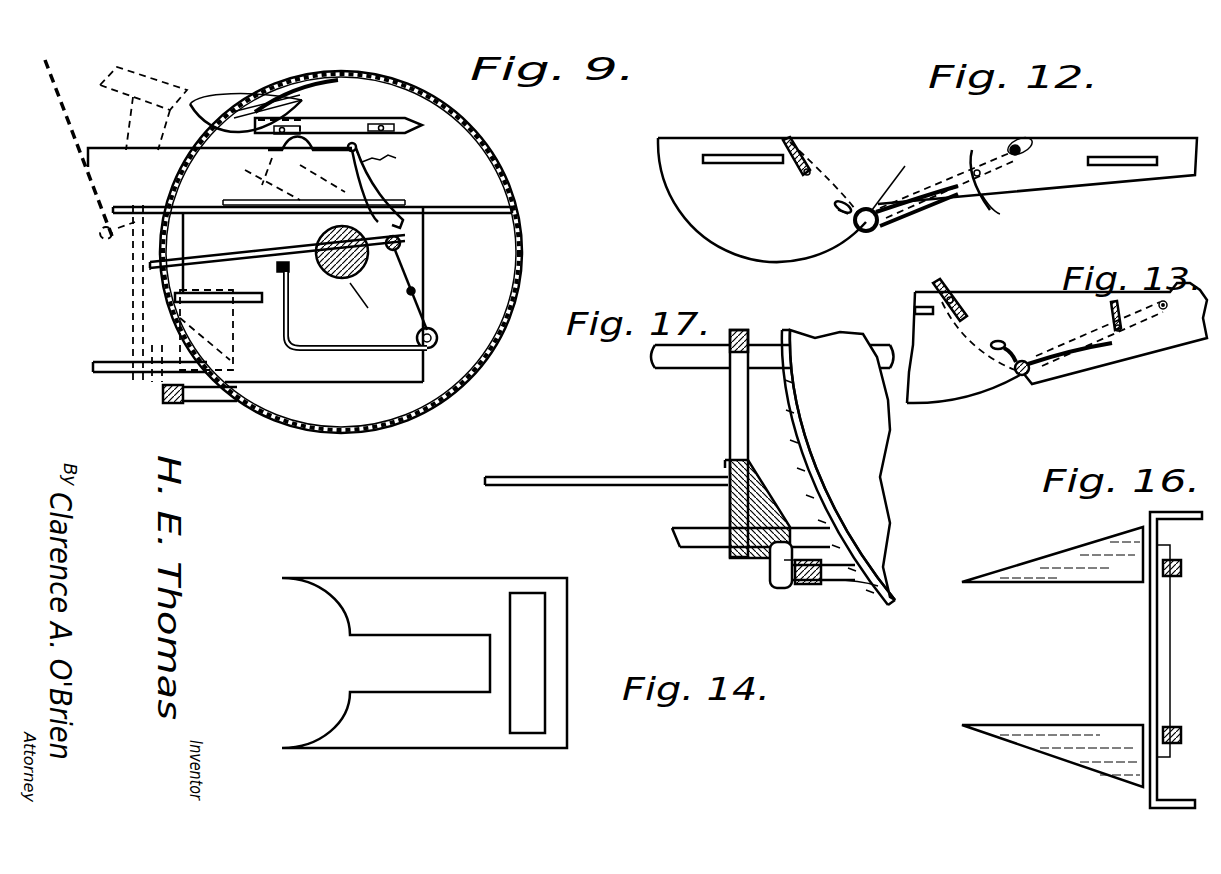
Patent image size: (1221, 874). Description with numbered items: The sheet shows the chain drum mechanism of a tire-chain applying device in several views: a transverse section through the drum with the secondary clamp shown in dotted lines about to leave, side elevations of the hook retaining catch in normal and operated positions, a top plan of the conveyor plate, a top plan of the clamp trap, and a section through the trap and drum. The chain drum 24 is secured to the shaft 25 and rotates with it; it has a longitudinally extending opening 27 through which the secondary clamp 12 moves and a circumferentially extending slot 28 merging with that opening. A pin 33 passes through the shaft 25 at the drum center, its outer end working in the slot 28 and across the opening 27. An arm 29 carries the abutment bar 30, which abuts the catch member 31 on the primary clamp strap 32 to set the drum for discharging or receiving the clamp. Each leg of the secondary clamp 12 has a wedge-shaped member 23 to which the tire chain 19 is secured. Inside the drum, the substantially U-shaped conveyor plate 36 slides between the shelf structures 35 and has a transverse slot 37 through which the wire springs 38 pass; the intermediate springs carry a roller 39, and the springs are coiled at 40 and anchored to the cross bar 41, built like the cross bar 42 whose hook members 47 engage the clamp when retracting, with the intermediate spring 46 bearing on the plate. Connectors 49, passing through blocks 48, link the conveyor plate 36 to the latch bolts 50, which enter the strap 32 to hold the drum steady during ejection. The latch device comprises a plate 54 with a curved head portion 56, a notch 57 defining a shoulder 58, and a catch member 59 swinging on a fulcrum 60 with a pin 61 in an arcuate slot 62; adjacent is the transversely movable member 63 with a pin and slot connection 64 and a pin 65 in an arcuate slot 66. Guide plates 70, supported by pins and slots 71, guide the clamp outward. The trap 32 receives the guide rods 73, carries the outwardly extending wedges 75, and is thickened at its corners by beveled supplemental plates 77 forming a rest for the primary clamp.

In FIG. 9, the secondary clamp 12 is at (160, 85).
In FIG. 9, the tire chain 19 is at (66, 140).
In FIG. 9, the wedge-shaped member 23 is at (100, 232).
In FIG. 17, the chain drum 24 is at (826, 494).
In FIG. 9, the shaft 25 is at (338, 272).
In FIG. 17, the longitudinally extending opening 27 is at (797, 402).
In FIG. 9, the circumferentially extending slot 28 is at (278, 88).
In FIG. 9, the arm 29 is at (216, 403).
In FIG. 17, the arm 29 is at (874, 588).
In FIG. 9, the abutment bar 30 is at (170, 405).
In FIG. 17, the abutment bar 30 is at (800, 592).
In FIG. 17, the catch member 31 is at (778, 591).
In FIG. 16, the catch member 31 is at (1177, 566).
In FIG. 9, the primary clamp strap 32 is at (124, 306).
In FIG. 17, the primary clamp strap 32 is at (732, 570).
In FIG. 16, the primary clamp strap 32 is at (1132, 656).
In FIG. 9, the pin 33 is at (238, 258).
In FIG. 9, the shelf structure 35 is at (232, 202).
In FIG. 9, the conveyor plate 36 is at (184, 210).
In FIG. 14, the conveyor plate 36 is at (412, 590).
In FIG. 9, the transversely extending slot 37 is at (354, 210).
In FIG. 14, the transversely extending slot 37 is at (540, 634).
In FIG. 9, the wire springs 38 is at (412, 278).
In FIG. 9, the roller 39 is at (306, 150).
In FIG. 9, the coil 40 is at (438, 334).
In FIG. 9, the cross bar 41 is at (426, 294).
In FIG. 9, the cross bar 42 is at (396, 158).
In FIG. 9, the intermediate spring 46 is at (394, 206).
In FIG. 9, the hook members 47 is at (128, 150).
In FIG. 9, the blocks 48 is at (260, 304).
In FIG. 9, the connectors 49 is at (185, 262).
In FIG. 9, the latch bolts 50 is at (113, 373).
In FIG. 9, the plate 54 is at (322, 128).
In FIG. 12, the plate 54 is at (864, 146).
In FIG. 13, the plate 54 is at (1002, 290).
In FIG. 12, the curved head portion 56 is at (758, 248).
In FIG. 13, the curved head portion 56 is at (946, 392).
In FIG. 12, the notch 57 is at (897, 175).
In FIG. 13, the notch 57 is at (1026, 360).
In FIG. 12, the shoulder 58 is at (920, 170).
In FIG. 13, the shoulder 58 is at (1070, 348).
In FIG. 12, the catch member 59 is at (925, 207).
In FIG. 13, the catch member 59 is at (1068, 368).
In FIG. 12, the fulcrum 60 is at (1020, 148).
In FIG. 13, the fulcrum 60 is at (1165, 310).
In FIG. 12, the pin 61 is at (1002, 207).
In FIG. 13, the pin 61 is at (1113, 328).
In FIG. 12, the arcuate slot 62 is at (976, 150).
In FIG. 13, the arcuate slot 62 is at (1110, 302).
In FIG. 12, the transversely movable member 63 is at (868, 234).
In FIG. 13, the transversely movable member 63 is at (945, 283).
In FIG. 12, the pin and slot connection 64 is at (810, 172).
In FIG. 13, the pin and slot connection 64 is at (944, 292).
In FIG. 12, the pin 65 is at (852, 204).
In FIG. 13, the pin 65 is at (1000, 342).
In FIG. 12, the arcuate slot 66 is at (840, 212).
In FIG. 13, the arcuate slot 66 is at (1006, 350).
In FIG. 9, the plates 70 is at (205, 105).
In FIG. 9, the pins and slots 71 is at (238, 112).
In FIG. 17, the guide rods 73 is at (700, 360).
In FIG. 17, the wedges 75 is at (604, 477).
In FIG. 16, the wedges 75 is at (1112, 570).
In FIG. 17, the supplemental plates 77 is at (763, 515).